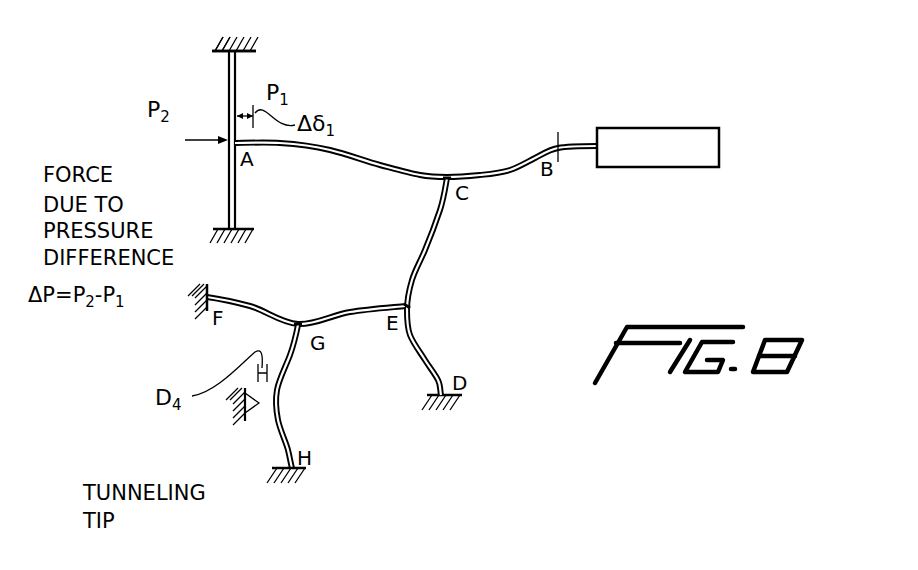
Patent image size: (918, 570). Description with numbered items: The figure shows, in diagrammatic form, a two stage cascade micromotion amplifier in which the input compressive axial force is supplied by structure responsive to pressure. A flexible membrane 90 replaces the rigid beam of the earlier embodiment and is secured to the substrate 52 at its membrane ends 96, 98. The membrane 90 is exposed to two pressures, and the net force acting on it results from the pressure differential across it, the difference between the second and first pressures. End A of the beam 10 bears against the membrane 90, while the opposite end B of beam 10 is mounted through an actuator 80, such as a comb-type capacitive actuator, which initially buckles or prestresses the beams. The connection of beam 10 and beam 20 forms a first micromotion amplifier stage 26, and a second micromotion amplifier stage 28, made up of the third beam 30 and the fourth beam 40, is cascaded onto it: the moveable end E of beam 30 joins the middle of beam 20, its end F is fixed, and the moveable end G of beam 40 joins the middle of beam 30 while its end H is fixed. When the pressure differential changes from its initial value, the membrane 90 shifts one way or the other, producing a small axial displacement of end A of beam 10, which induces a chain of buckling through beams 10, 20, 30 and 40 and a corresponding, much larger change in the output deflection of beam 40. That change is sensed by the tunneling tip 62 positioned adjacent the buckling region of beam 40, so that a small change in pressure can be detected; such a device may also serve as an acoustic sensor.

The beam 10 is at (374, 154).
The beam 20 is at (437, 248).
The third beam 30 is at (347, 292).
The fourth beam 40 is at (293, 365).
The substrate 52 is at (218, 44).
The tunneling tip 62 is at (250, 410).
The actuator 80 is at (715, 160).
The flexible membrane 90 is at (238, 184).
The membrane end 96 is at (222, 56).
The membrane end 98 is at (225, 228).
The micromotion amplifier stage 26 is at (537, 223).
The second micromotion amplifier stage 28 is at (190, 351).